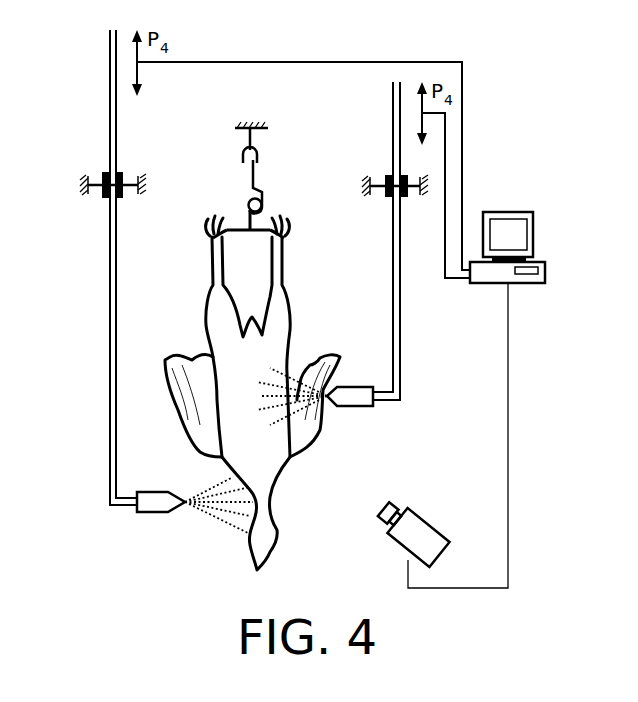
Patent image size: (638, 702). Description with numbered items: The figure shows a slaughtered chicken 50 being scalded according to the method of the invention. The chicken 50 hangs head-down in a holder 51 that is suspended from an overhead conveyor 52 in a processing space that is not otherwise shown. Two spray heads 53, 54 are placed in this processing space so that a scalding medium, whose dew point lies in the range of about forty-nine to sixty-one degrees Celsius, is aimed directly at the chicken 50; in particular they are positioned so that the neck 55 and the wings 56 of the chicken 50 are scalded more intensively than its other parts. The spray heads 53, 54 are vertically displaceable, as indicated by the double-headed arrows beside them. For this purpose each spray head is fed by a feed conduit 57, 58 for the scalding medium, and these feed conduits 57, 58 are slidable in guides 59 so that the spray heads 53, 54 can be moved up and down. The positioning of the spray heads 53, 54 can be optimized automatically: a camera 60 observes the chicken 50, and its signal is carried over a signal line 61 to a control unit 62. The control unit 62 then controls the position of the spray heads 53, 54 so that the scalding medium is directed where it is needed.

The slaughtered chicken 50 is at (189, 314).
The holder 51 is at (251, 233).
The overhead conveyor 52 is at (259, 166).
The spray head 53 is at (157, 512).
The spray head 54 is at (357, 391).
The neck 55 is at (263, 502).
The wings 56 is at (192, 422).
The feed conduit 57 is at (107, 348).
The feed conduit 58 is at (401, 348).
The guides 59 is at (103, 172).
The camera 60 is at (422, 518).
The signal line 61 is at (508, 443).
The control unit 62 is at (548, 272).